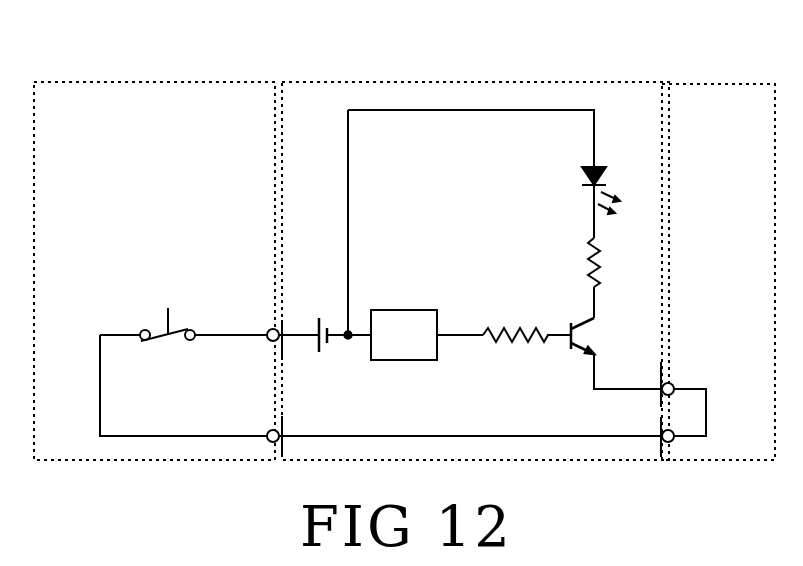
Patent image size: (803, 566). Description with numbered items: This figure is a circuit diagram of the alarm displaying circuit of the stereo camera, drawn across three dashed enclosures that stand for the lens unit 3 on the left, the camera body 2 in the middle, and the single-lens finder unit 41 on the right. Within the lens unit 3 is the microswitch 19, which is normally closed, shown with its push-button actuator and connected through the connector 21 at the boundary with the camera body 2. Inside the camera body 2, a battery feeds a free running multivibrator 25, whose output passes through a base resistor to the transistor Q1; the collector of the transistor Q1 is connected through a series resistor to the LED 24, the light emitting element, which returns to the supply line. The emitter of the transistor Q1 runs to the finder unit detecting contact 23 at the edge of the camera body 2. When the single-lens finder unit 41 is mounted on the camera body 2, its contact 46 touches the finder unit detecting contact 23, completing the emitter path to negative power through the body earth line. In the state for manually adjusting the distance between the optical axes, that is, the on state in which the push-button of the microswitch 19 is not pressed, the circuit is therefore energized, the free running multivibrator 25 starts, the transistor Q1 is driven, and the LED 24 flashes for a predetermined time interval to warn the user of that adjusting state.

The camera body 2 is at (459, 82).
The lens unit 3 is at (167, 82).
The single-lens finder unit 41 is at (720, 84).
The microswitch 19 is at (165, 315).
The connector 21 is at (278, 327).
The finder unit detecting contact 23 is at (661, 384).
The LED 24 is at (588, 164).
The free running multivibrator 25 is at (407, 310).
The contact 46 is at (676, 384).
The transistor Q1 is at (597, 336).